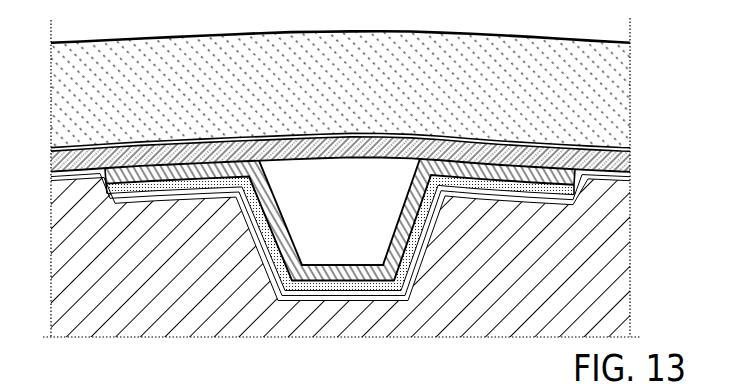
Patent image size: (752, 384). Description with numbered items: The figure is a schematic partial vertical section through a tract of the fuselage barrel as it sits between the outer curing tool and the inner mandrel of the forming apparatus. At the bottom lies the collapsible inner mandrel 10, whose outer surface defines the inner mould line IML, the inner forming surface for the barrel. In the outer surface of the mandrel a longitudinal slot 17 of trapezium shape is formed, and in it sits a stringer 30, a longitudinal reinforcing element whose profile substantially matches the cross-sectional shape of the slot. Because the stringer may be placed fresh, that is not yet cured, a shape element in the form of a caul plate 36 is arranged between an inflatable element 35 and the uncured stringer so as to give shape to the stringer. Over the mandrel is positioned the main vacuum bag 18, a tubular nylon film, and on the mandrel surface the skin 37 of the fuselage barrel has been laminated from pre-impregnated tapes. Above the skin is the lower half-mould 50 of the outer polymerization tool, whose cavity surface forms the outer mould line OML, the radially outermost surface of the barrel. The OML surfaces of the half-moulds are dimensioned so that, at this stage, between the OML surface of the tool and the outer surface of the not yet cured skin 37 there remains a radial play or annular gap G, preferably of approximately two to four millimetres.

The collapsible inner mandrel 10 is at (162, 322).
The longitudinal slots 17 is at (270, 258).
The main vacuum bag 18 is at (97, 200).
The stringers 30 is at (543, 168).
The inflatable element 35 is at (331, 222).
The caul plate 36 is at (326, 302).
The skin 37 is at (217, 166).
The lower half-mould 50 is at (462, 48).
The annular gap G is at (101, 183).
The outer mould line OML is at (373, 140).
The inner mould line IML is at (530, 184).